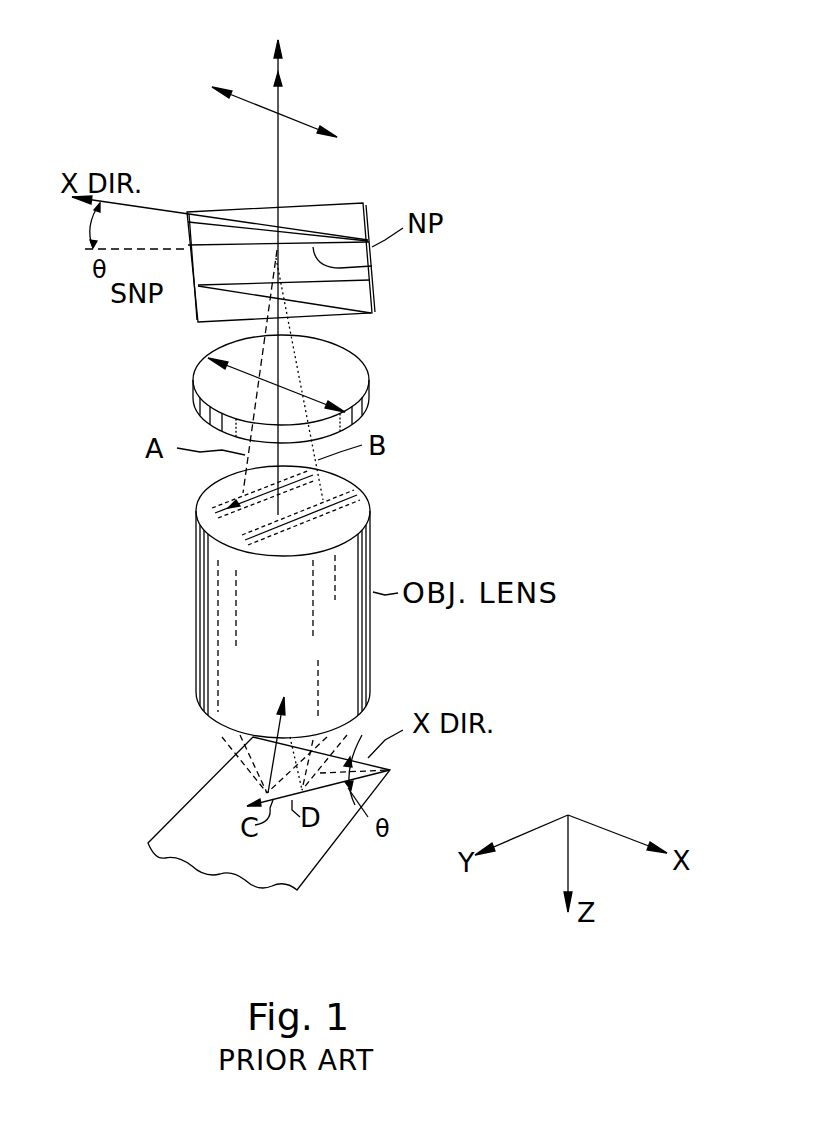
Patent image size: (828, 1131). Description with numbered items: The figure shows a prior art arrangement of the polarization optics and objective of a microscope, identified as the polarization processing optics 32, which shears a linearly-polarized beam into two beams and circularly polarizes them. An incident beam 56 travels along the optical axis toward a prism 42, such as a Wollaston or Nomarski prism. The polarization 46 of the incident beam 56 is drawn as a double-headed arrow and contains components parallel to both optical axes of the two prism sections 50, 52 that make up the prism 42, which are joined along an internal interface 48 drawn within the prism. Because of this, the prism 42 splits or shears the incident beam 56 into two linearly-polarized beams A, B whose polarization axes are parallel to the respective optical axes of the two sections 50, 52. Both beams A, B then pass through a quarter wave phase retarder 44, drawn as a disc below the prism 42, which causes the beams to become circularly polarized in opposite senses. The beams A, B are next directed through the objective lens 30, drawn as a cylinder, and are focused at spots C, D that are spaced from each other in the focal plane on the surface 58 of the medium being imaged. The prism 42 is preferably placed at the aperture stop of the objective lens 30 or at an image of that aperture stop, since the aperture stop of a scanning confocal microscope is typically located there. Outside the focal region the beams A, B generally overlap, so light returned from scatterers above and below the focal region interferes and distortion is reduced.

The objective lens 30 is at (363, 513).
The polarization processing optics 32 is at (528, 298).
The prism 42 is at (360, 203).
The quarter wave phase retarder 44 is at (357, 370).
The polarization 46 is at (305, 118).
The prism interface surface 48 is at (372, 266).
The prism section 50 is at (353, 300).
The prism section 52 is at (212, 305).
The incident beam 56 is at (278, 70).
The recording medium 58 is at (300, 865).